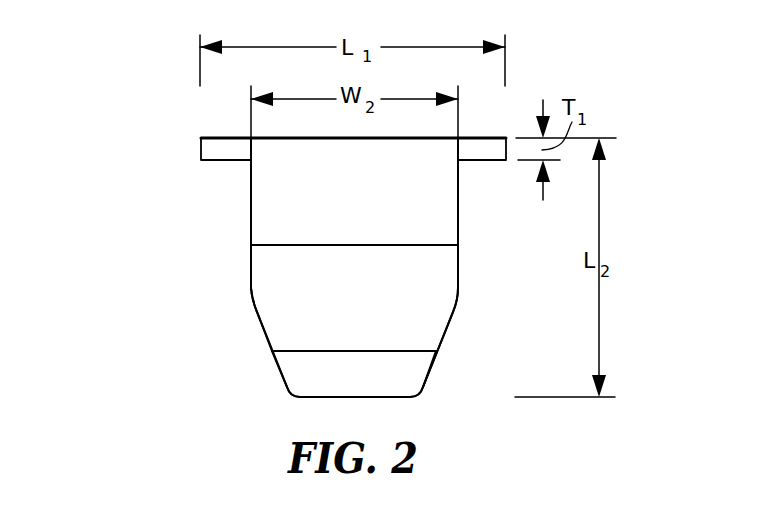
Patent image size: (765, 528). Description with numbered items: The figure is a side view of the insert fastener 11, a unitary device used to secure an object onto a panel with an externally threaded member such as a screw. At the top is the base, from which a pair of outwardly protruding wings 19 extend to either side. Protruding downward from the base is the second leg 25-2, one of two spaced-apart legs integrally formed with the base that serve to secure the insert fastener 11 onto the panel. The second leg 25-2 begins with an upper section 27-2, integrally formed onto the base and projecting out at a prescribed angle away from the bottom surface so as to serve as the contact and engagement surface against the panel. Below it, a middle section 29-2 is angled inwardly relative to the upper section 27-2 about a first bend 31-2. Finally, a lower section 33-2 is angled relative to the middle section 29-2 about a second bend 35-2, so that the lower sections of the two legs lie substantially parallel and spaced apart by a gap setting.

The insert fastener 11 is at (444, 400).
The outwardly protruding wings 19 is at (200, 147).
The second leg 25-2 is at (467, 308).
The upper section 27-2 is at (310, 184).
The middle section 29-2 is at (290, 280).
The first bend 31-2 is at (293, 244).
The lower section 33-2 is at (310, 376).
The second bend 35-2 is at (302, 350).